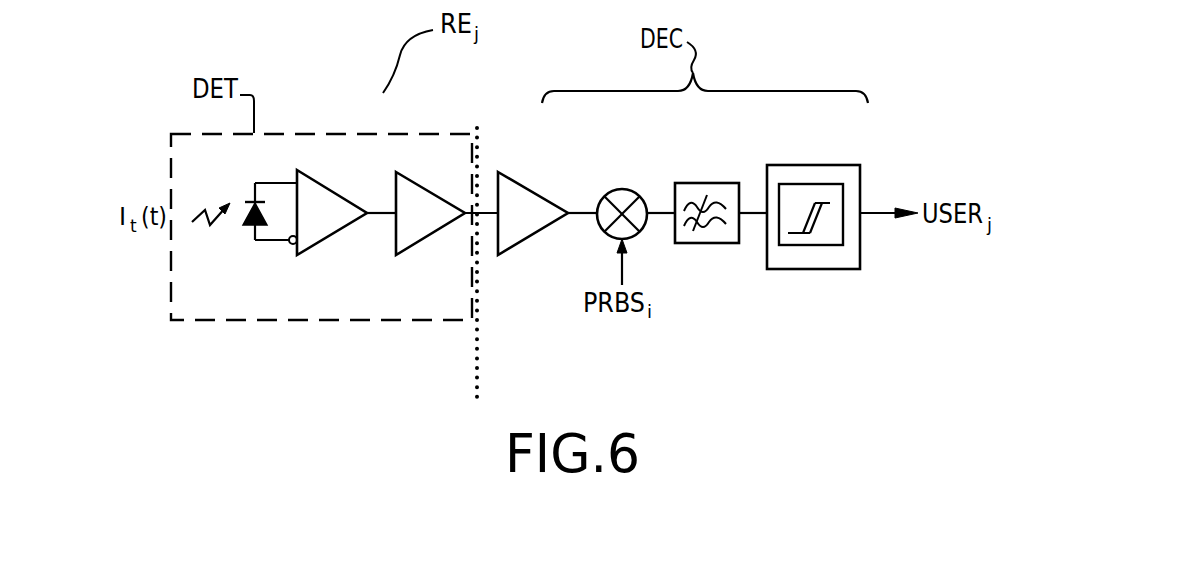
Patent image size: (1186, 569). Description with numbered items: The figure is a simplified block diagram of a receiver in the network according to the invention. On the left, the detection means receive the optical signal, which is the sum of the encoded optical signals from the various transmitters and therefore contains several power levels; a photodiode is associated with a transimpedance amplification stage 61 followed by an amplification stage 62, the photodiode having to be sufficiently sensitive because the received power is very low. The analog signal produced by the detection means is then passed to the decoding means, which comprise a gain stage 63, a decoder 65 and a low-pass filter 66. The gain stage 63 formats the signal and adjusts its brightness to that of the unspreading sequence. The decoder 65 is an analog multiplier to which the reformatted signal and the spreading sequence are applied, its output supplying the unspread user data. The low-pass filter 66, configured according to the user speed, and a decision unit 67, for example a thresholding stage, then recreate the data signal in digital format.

The transimpedance amplification stage 61 is at (326, 203).
The amplification stage 62 is at (420, 203).
The gain stage 63 is at (528, 203).
The decoder 65 is at (623, 203).
The low-pass filter 66 is at (697, 193).
The decision unit 67 is at (802, 200).